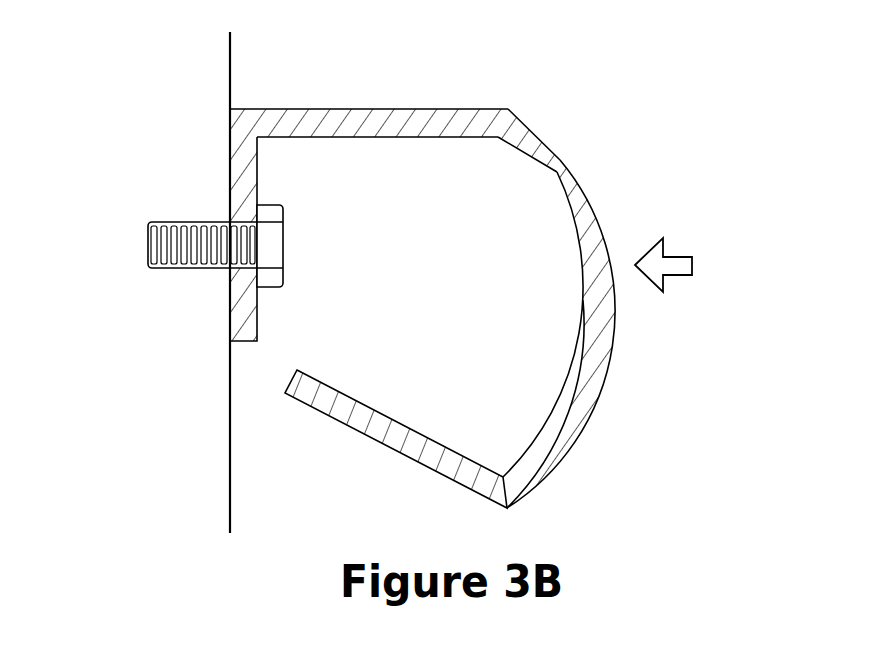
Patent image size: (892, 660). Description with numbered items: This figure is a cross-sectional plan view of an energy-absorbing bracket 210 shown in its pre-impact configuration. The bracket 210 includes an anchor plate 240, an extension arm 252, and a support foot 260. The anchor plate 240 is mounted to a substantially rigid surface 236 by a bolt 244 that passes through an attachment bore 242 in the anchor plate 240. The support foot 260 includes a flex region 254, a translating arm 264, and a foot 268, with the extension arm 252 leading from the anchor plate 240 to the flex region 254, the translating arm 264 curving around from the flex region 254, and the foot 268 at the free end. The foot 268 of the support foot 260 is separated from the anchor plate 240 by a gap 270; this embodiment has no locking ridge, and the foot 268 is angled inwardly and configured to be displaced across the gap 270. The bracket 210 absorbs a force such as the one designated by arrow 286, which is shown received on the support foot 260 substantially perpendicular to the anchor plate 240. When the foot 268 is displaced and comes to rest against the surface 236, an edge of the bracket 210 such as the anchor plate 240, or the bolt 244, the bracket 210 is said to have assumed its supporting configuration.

The energy-absorbing bracket 210 is at (647, 208).
The surface 236 is at (200, 392).
The anchor plate 240 is at (243, 173).
The attachment bore 242 is at (240, 283).
The bolt 244 is at (152, 248).
The extension arm 252 is at (353, 123).
The flex region 254 is at (548, 110).
The support foot 260 is at (665, 311).
The translating arm 264 is at (593, 372).
The foot 268 is at (415, 452).
The gap 270 is at (269, 403).
The arrow 286 is at (673, 267).